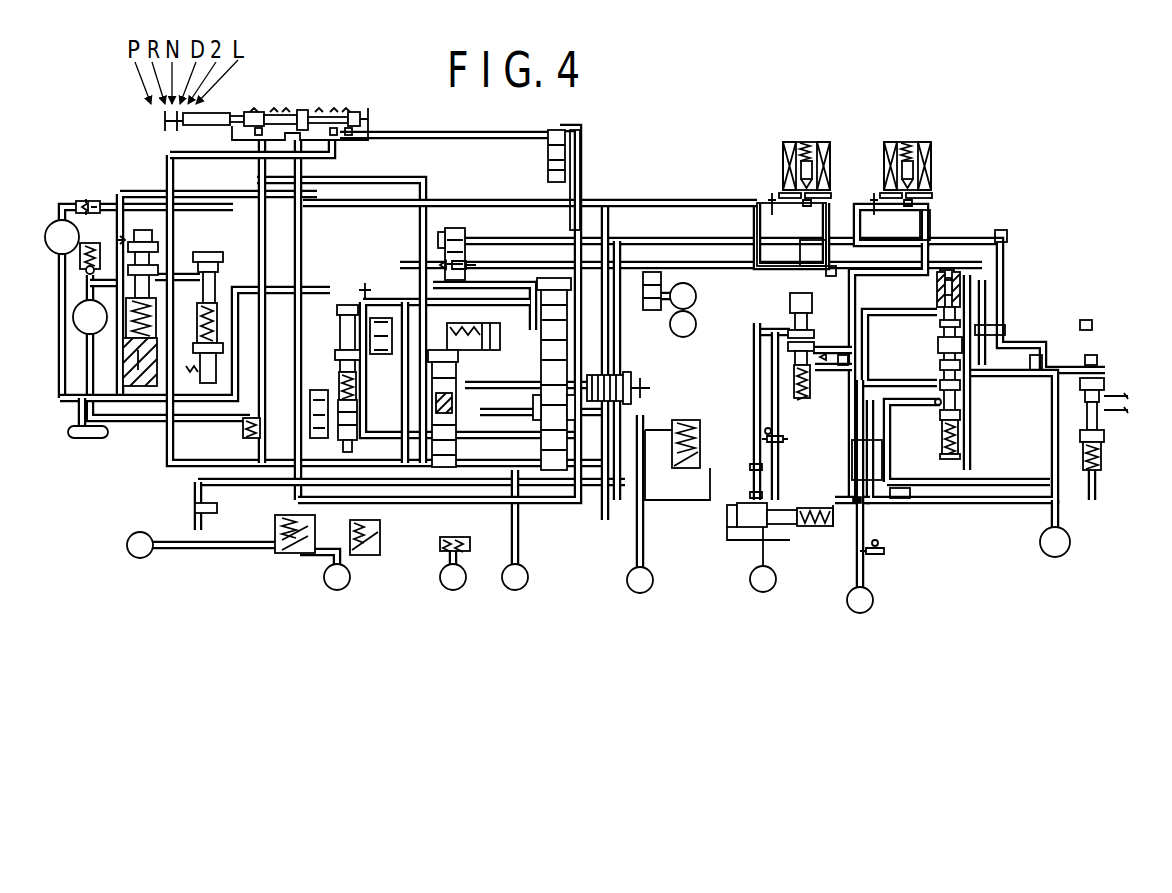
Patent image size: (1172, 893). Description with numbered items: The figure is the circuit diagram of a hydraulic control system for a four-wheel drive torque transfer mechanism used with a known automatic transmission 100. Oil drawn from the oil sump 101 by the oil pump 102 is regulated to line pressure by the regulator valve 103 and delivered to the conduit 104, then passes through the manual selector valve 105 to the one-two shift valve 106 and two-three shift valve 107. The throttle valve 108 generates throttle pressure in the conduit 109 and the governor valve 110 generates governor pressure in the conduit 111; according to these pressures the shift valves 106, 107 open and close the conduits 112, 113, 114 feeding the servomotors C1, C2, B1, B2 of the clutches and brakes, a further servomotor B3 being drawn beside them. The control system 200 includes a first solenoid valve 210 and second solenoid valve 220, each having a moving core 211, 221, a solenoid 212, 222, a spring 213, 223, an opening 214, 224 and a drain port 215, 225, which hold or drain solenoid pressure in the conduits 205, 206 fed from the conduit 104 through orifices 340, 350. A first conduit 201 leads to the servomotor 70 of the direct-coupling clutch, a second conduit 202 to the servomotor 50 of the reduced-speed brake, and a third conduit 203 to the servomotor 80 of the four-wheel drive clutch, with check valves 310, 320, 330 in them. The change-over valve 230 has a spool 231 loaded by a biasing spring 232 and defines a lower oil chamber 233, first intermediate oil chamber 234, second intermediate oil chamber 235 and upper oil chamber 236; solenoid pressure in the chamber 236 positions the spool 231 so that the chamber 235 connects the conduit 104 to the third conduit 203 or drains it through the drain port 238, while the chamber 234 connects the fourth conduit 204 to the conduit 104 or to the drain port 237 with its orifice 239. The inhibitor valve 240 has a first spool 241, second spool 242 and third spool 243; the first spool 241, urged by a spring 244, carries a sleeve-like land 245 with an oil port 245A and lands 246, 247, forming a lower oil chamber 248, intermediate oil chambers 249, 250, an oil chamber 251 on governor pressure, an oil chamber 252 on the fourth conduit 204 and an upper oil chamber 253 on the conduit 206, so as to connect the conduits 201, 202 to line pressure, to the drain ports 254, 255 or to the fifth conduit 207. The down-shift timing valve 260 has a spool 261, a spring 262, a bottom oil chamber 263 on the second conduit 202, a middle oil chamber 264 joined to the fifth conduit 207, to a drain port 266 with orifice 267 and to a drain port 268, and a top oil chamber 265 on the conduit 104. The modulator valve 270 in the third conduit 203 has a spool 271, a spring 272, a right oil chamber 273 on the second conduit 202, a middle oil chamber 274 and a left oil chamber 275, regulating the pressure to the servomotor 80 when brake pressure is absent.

The hydraulic servomotor 50 is at (1067, 554).
The hydraulic servomotor 70 is at (877, 595).
The hydraulic servomotor 80 is at (777, 587).
The automatic transmission 100 is at (583, 170).
The oil sump 101 is at (98, 440).
The oil pump 102 is at (84, 335).
The regulator valve 103 is at (148, 226).
The conduit 104 is at (252, 193).
The manual selector valve 105 is at (290, 106).
The 1-2 shift valve 106 is at (548, 449).
The 2-3 shift valve 107 is at (480, 455).
The throttle valve 108 is at (347, 302).
The conduit 109 is at (263, 337).
The governor valve 110 is at (622, 371).
The conduit 111 is at (642, 238).
The conduit 112 is at (497, 408).
The conduit 113 is at (410, 443).
The conduit 114 is at (503, 363).
The hydraulic control system 200 is at (728, 158).
The first conduit 201 is at (885, 480).
The second conduit 202 is at (900, 498).
The third conduit 203 is at (760, 377).
The fourth conduit 204 is at (985, 332).
The conduit of the first solenoid pressure 205 is at (817, 253).
The conduit of the second solenoid pressure 206 is at (930, 224).
The fifth conduit 207 is at (1040, 360).
The first solenoid valve 210 is at (804, 135).
The moving core 211 is at (812, 186).
The solenoid 212 is at (783, 155).
The spring 213 is at (800, 143).
The opening 214 is at (812, 203).
The drain port 215 is at (805, 190).
The second solenoid valve 220 is at (918, 140).
The moving core 221 is at (927, 188).
The solenoid 222 is at (897, 186).
The spring 223 is at (902, 143).
The opening 224 is at (932, 203).
The drain port 225 is at (932, 195).
The change-over valve 230 is at (780, 361).
The spool 231 is at (790, 343).
The biasing spring 232 is at (787, 398).
The lower oil chamber 233 is at (803, 400).
The first intermediate oil chamber 234 is at (797, 355).
The second intermediate oil chamber 235 is at (790, 318).
The upper oil chamber 236 is at (790, 296).
The drain port 237 is at (822, 378).
The drain port 238 is at (833, 275).
The orifice 239 is at (845, 362).
The inhibitor valve 240 is at (972, 415).
The first spool 241 is at (965, 385).
The second spool 242 is at (968, 303).
The third spool 243 is at (947, 273).
The spring 244 is at (958, 470).
The sleeve-like land 245 is at (943, 428).
The oil port 245A is at (960, 466).
The land 246 is at (965, 410).
The land 247 is at (965, 370).
The lower oil chamber 248 is at (947, 460).
The first intermediate oil chamber 249 is at (937, 405).
The second intermediate oil chamber 250 is at (972, 440).
The oil chamber 251 is at (1088, 328).
The oil chamber 252 is at (944, 303).
The upper oil chamber 253 is at (1000, 235).
The drain port 254 is at (968, 452).
The drain port 255 is at (968, 425).
The down-shift timing valve 260 is at (1118, 427).
The spool 261 is at (1093, 378).
The spring 262 is at (1083, 478).
The bottom oil chamber 263 is at (1100, 472).
The middle oil chamber 264 is at (1103, 437).
The top oil chamber 265 is at (1093, 362).
The drain port 266 is at (1103, 410).
The orifice 267 is at (1122, 396).
The drain port 268 is at (1103, 387).
The modulator valve 270 is at (747, 520).
The spool 271 is at (753, 538).
The spring 272 is at (817, 526).
The right oil chamber 273 is at (815, 508).
The middle oil chamber 274 is at (753, 466).
The left oil chamber 275 is at (756, 492).
The check valve 310 is at (878, 548).
The check valve 320 is at (853, 504).
The check valve 330 is at (780, 442).
The orifice 340 is at (766, 200).
The orifice 350 is at (883, 218).
The hydraulic servomotor C1 is at (141, 559).
The hydraulic servomotor C2 is at (470, 607).
The hydraulic servomotor B1 is at (527, 586).
The hydraulic servomotor B2 is at (650, 590).
The first and reverse brake B3 is at (686, 346).